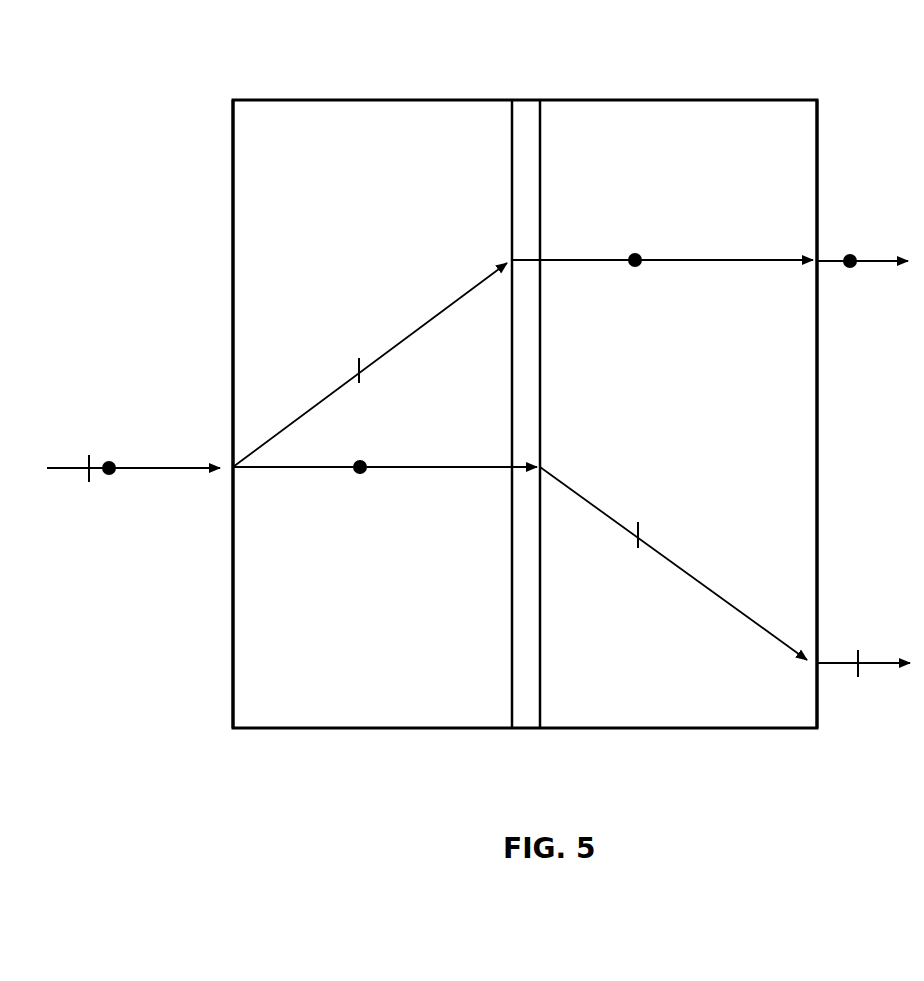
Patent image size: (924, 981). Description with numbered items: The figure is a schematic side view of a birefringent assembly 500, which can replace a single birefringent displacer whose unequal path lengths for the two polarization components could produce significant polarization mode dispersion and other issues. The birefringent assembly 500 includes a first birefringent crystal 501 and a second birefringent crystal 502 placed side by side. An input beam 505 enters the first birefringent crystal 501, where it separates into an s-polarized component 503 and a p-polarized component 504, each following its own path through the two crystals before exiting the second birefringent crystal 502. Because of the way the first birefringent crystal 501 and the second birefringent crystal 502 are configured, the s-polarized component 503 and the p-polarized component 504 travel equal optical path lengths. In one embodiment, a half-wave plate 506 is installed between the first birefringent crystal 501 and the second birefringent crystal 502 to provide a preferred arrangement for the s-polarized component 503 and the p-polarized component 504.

The birefringent assembly 500 is at (178, 80).
The first birefringent crystal 501 is at (407, 147).
The second birefringent crystal 502 is at (697, 150).
The s-polarized component 503 is at (402, 465).
The p-polarized component 504 is at (328, 392).
The input beam 505 is at (138, 470).
The half-wave plate 506 is at (527, 703).